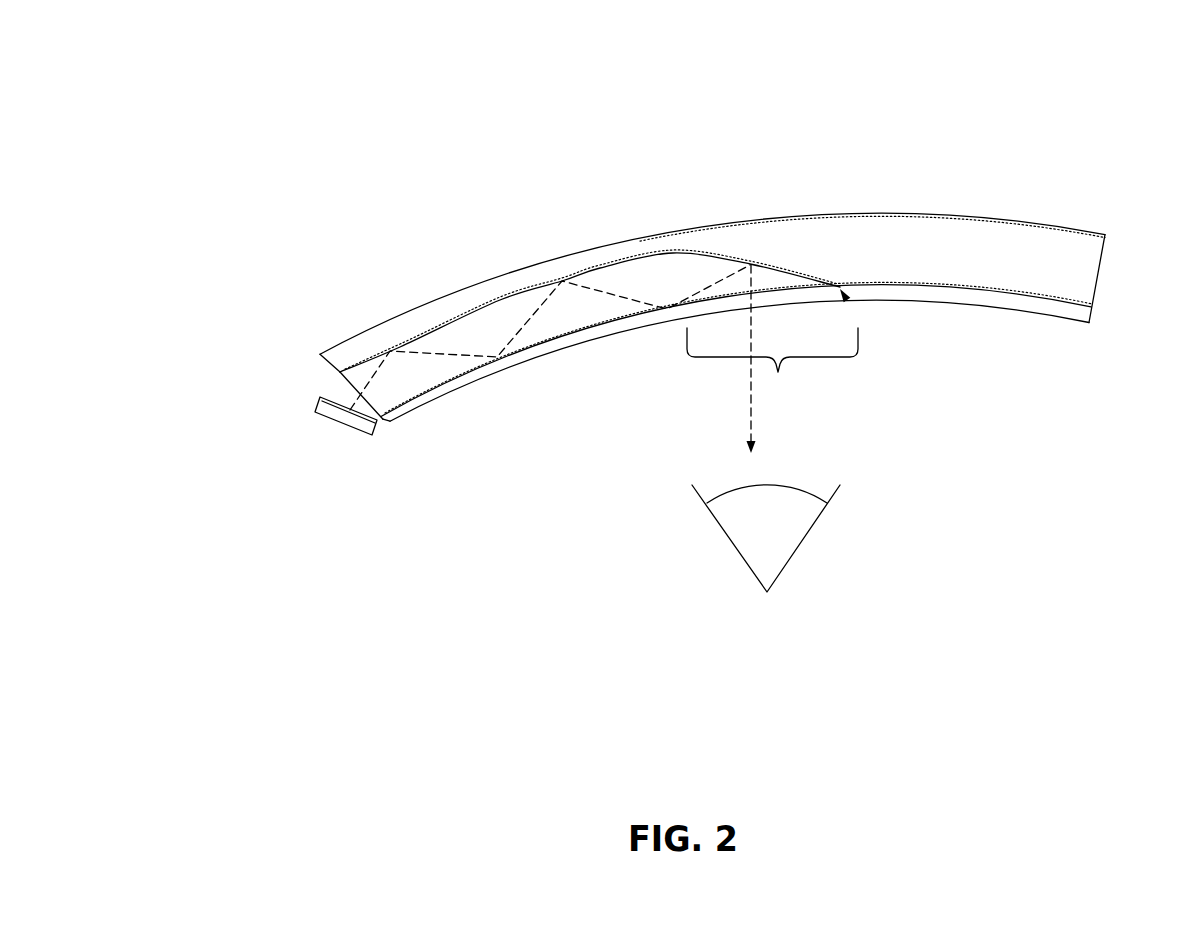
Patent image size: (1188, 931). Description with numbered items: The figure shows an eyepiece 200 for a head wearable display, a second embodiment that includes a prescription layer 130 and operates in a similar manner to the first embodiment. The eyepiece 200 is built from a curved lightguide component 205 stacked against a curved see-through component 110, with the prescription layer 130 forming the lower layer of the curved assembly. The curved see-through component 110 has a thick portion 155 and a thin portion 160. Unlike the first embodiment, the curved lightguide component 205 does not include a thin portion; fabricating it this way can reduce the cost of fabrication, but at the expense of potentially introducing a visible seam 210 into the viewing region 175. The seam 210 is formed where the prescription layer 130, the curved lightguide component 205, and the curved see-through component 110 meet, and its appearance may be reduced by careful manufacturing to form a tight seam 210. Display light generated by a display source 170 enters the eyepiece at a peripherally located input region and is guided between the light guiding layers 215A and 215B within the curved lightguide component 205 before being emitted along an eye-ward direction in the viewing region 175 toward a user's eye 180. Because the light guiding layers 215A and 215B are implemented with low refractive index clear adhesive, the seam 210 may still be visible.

The eyepiece 200 is at (232, 83).
The curved see-through component 110 is at (980, 236).
The thick portion 155 is at (925, 264).
The thin portion 160 is at (414, 318).
The light guiding layer 215A is at (350, 364).
The curved lightguide component 205 is at (510, 312).
The light guiding layer 215B is at (593, 333).
The prescription layer 130 is at (463, 380).
The seam 210 is at (847, 300).
The viewing region 175 is at (778, 372).
The user's eye 180 is at (749, 542).
The display source 170 is at (352, 437).